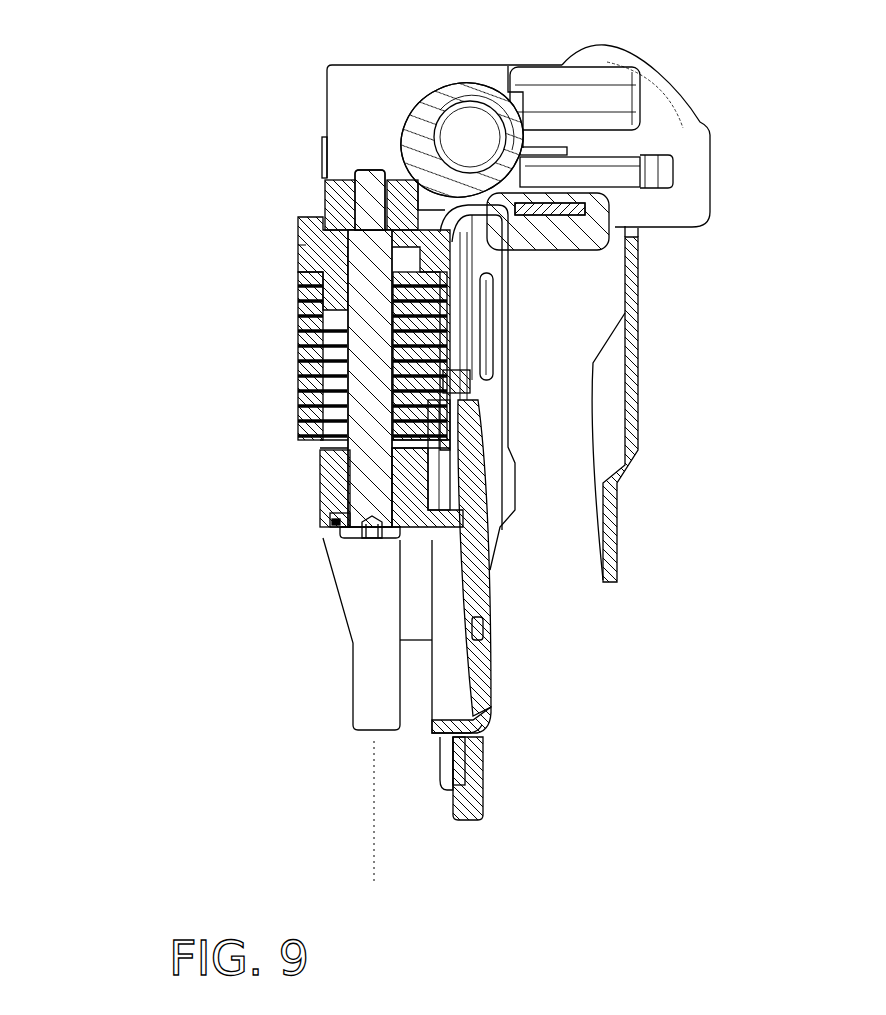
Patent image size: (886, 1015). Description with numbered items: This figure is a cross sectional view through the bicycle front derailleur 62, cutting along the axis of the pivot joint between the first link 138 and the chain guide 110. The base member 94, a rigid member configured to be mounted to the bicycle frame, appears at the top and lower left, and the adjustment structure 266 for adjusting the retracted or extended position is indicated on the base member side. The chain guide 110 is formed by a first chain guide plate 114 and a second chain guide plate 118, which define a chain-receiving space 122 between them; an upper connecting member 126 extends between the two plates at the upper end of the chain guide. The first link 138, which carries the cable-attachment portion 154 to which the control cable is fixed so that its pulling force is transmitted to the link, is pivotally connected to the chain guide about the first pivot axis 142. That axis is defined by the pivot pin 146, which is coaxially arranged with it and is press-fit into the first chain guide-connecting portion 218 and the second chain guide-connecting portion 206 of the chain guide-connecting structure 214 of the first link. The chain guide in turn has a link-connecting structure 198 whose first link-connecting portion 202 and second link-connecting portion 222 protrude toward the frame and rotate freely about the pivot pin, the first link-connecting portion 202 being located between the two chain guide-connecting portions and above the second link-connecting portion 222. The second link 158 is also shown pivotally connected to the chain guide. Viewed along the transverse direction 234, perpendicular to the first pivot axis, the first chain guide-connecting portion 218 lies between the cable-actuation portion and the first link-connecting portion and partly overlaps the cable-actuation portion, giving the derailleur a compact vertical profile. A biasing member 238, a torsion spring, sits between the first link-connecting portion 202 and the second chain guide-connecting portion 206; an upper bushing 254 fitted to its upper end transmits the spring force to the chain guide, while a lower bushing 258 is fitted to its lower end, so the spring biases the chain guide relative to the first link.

The bicycle front derailleur 62 is at (148, 38).
The base member 94 is at (580, 57).
The chain guide 110 is at (620, 533).
The first chain guide plate 114 is at (487, 693).
The second chain guide plate 118 is at (640, 393).
The chain-receiving space 122 is at (568, 375).
The upper connecting member 126 is at (637, 237).
The first link 138 is at (342, 77).
The first pivot axis 142 is at (373, 809).
The pivot pin 146 is at (373, 173).
The cable-attachment portion 154 is at (457, 83).
The second link 158 is at (623, 177).
The link-connecting structure 198 is at (125, 246).
The first link-connecting portion 202 is at (298, 222).
The second chain guide-connecting portion 206 is at (332, 487).
The chain guide-connecting structure 214 is at (160, 345).
The first chain guide-connecting portion 218 is at (335, 192).
The second link-connecting portion 222 is at (343, 518).
The transverse direction 234 is at (820, 396).
The biasing member 238 is at (298, 370).
The upper bushing 254 is at (298, 248).
The lower bushing 258 is at (402, 407).
The adjustment structure 266 is at (748, 177).